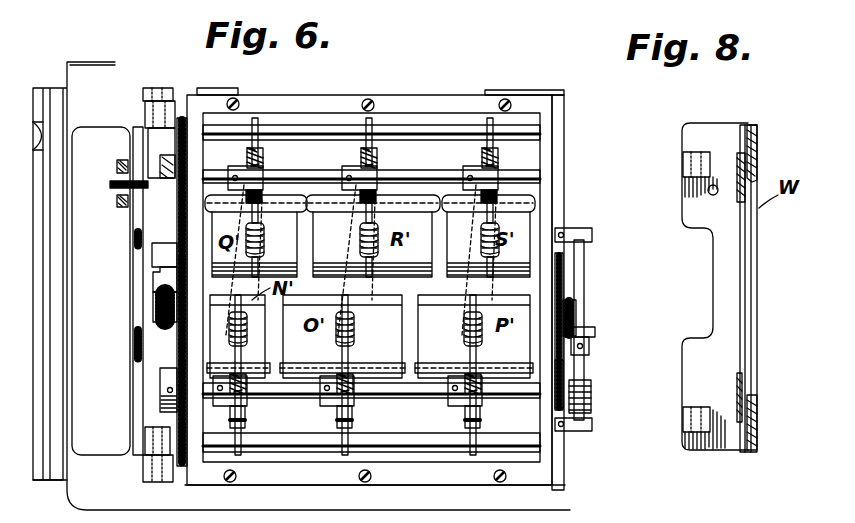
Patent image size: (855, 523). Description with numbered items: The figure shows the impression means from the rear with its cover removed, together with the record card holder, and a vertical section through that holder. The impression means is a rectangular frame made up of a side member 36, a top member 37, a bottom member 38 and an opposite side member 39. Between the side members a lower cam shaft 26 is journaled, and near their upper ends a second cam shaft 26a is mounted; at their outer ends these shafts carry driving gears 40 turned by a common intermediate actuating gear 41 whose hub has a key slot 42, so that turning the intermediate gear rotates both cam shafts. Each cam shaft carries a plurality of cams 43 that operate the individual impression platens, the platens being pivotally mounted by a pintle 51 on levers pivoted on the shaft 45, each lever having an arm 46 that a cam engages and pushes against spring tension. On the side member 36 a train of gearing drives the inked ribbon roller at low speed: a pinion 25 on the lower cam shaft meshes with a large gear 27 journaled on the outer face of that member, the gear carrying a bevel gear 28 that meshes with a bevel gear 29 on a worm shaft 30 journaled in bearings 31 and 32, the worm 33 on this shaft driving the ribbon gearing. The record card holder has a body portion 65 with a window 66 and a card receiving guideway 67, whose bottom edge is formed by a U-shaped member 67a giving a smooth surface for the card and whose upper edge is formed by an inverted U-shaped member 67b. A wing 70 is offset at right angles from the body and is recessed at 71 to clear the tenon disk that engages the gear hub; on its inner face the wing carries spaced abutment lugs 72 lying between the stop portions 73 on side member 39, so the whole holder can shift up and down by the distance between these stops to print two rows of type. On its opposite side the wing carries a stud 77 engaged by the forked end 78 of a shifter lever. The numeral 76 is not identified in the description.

In FIG. 6, the pinion 25 is at (562, 378).
In FIG. 6, the lower cam shaft 26 is at (500, 397).
In FIG. 6, the second cam shaft 26a is at (308, 168).
In FIG. 6, the gear 27 is at (562, 291).
In FIG. 6, the bevel gear 28 is at (574, 305).
In FIG. 6, the bevel gear 29 is at (592, 330).
In FIG. 6, the worm shaft 30 is at (585, 268).
In FIG. 6, the bearing 31 is at (592, 236).
In FIG. 6, the bearing 32 is at (592, 425).
In FIG. 6, the worm 33 is at (592, 392).
In FIG. 6, the side member 36 is at (560, 211).
In FIG. 6, the top member 37 is at (427, 102).
In FIG. 6, the bottom member 38 is at (426, 492).
In FIG. 6, the side member 39 is at (200, 92).
In FIG. 6, the driving gear 40 is at (177, 206).
In FIG. 6, the intermediate actuating gear 41 is at (160, 252).
In FIG. 6, the key slot 42 is at (165, 275).
In FIG. 6, the cam 43 is at (480, 165).
In FIG. 6, the shaft 45 is at (448, 130).
In FIG. 6, the arm 46 is at (258, 130).
In FIG. 6, the pintle 51 is at (348, 205).
In FIG. 8, the body portion 65 is at (758, 287).
In FIG. 8, the window 66 is at (737, 386).
In FIG. 8, the card receiving guideway 67 is at (762, 170).
In FIG. 8, the U-shaped member 67a is at (745, 424).
In FIG. 8, the inverted U-shaped member 67b is at (750, 135).
In FIG. 6, the wing 70 is at (133, 344).
In FIG. 8, the wing 70 is at (690, 133).
In FIG. 6, the recess 71 is at (133, 216).
In FIG. 8, the recess 71 is at (712, 262).
In FIG. 6, the abutment lug 72 is at (145, 118).
In FIG. 8, the abutment lug 72 is at (683, 160).
In FIG. 6, the stop portion 73 is at (162, 78).
In FIG. 6, the housing 76 is at (42, 440).
In FIG. 6, the stud 77 is at (118, 184).
In FIG. 8, the stud 77 is at (708, 191).
In FIG. 6, the forked end 78 is at (118, 162).